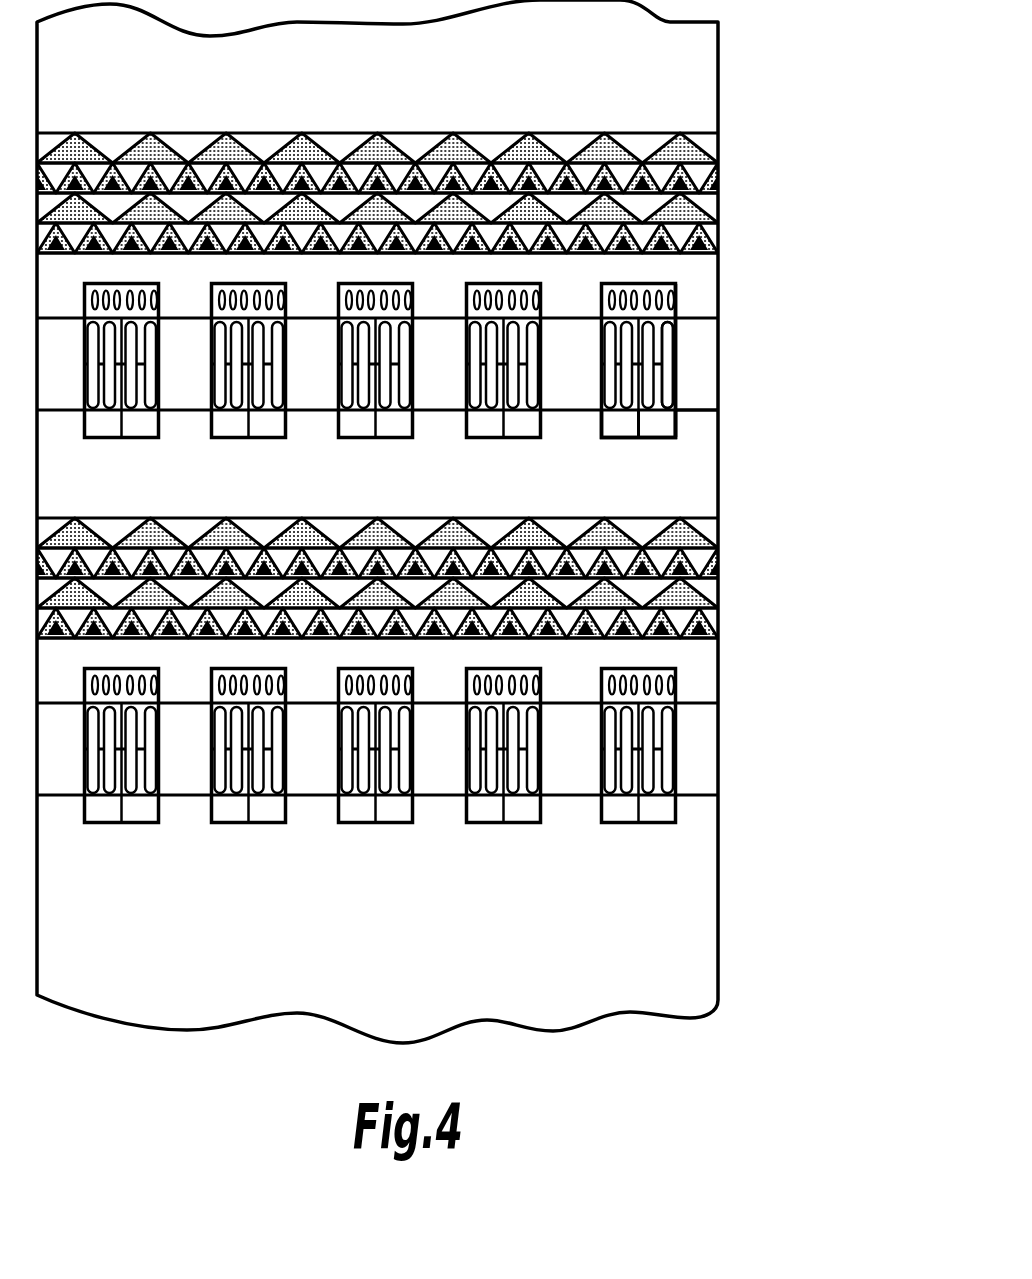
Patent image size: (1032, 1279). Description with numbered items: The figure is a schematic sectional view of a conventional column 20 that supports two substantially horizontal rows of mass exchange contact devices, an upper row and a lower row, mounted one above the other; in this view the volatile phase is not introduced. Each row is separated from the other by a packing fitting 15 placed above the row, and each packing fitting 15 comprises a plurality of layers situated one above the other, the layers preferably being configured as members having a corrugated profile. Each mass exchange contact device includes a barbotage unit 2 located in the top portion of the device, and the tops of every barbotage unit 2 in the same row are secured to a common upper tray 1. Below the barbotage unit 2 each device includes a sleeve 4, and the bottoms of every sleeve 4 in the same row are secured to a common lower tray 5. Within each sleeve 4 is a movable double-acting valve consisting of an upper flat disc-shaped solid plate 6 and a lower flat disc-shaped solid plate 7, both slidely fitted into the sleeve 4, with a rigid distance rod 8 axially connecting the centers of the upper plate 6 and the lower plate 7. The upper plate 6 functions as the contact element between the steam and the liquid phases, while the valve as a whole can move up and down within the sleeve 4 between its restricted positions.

The common upper tray 1 is at (662, 340).
The barbotage unit 2 is at (680, 682).
The sleeve 4 is at (672, 326).
The common lower tray 5 is at (718, 405).
The upper flat disc-shaped solid plate 6 is at (678, 360).
The lower flat disc-shaped solid plate 7 is at (676, 438).
The rigid distance rod 8 is at (641, 430).
The packing fitting 15 is at (612, 181).
The column 20 is at (718, 683).